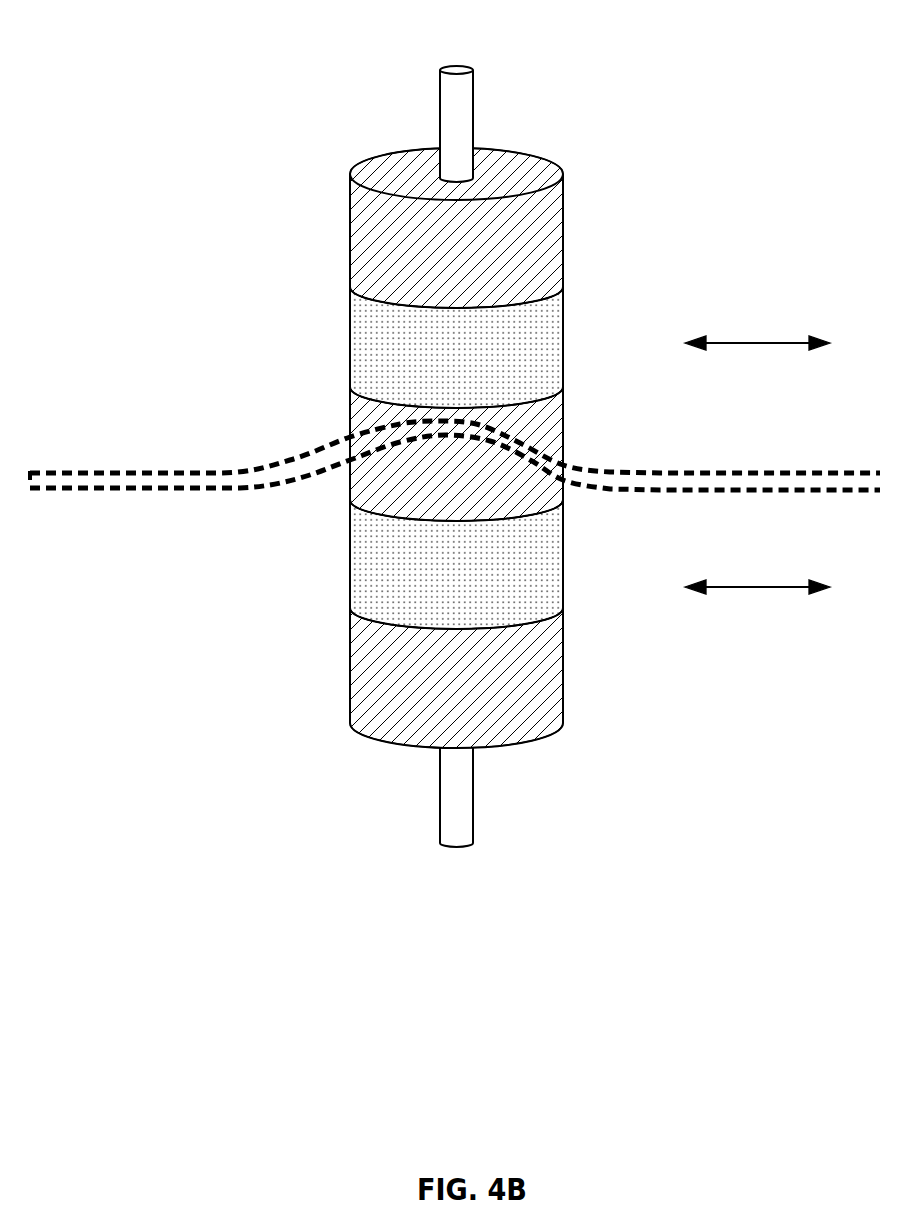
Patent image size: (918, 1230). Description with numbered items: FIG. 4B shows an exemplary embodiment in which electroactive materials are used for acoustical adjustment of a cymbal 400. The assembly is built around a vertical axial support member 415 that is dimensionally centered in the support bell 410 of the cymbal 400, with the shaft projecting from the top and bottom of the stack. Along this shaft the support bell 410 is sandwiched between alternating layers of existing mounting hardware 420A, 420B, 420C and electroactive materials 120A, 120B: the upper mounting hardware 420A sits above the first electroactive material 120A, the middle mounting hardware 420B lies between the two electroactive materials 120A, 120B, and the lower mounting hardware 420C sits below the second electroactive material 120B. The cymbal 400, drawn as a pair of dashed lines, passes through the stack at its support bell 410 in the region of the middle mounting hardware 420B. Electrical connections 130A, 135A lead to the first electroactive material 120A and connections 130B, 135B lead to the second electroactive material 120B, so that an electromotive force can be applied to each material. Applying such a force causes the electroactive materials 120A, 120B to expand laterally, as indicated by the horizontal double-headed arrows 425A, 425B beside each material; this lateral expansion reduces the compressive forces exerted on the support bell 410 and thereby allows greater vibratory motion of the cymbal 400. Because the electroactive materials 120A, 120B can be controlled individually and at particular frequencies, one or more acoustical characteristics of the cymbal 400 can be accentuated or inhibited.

The axial support member 415 is at (473, 110).
The existing mounting hardware 420A is at (350, 242).
The existing mounting hardware 420B is at (350, 430).
The existing mounting hardware 420C is at (350, 665).
The electroactive material 120A is at (563, 333).
The electroactive material 120B is at (563, 562).
The electromotive force 130A is at (363, 307).
The first sensor electrode 135A is at (363, 363).
The electromotive force 130B is at (363, 527).
The second sensor electrode 135B is at (363, 583).
The cymbal 400 is at (158, 470).
The support bell 410 is at (517, 433).
The first direction of movement 425A is at (757, 342).
The second direction of movement 425B is at (747, 587).